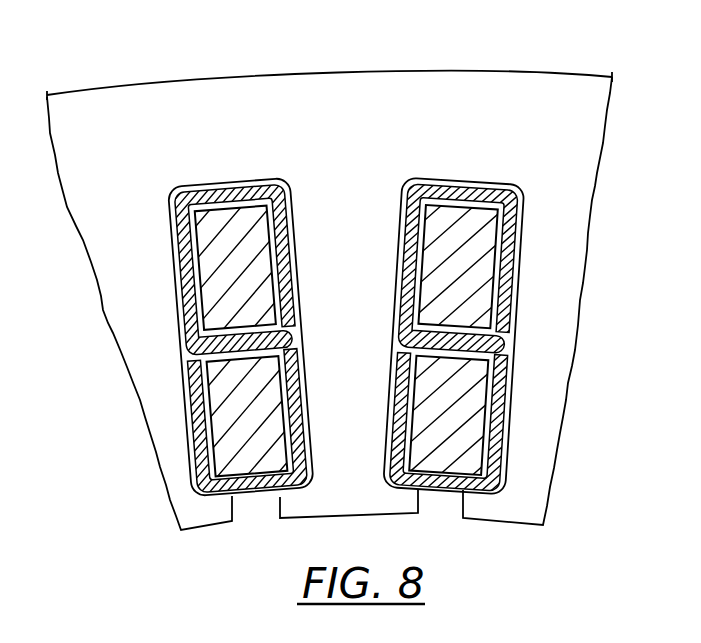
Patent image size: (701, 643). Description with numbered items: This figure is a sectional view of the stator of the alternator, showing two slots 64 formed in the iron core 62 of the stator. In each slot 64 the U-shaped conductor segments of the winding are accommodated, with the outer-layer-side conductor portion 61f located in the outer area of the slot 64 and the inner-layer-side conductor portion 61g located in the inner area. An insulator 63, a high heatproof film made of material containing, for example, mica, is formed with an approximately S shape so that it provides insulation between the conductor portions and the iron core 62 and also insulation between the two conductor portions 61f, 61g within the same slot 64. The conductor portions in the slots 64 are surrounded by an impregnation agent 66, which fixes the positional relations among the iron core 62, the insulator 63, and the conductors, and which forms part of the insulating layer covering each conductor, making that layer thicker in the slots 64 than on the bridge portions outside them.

The iron core 62 is at (339, 84).
The slots 64 is at (446, 160).
The insulator 63 is at (515, 210).
The outer-layer-side conductor portion 61f is at (487, 250).
The impregnation agent 66 is at (513, 337).
The inner-layer-side conductor portion 61g is at (463, 427).